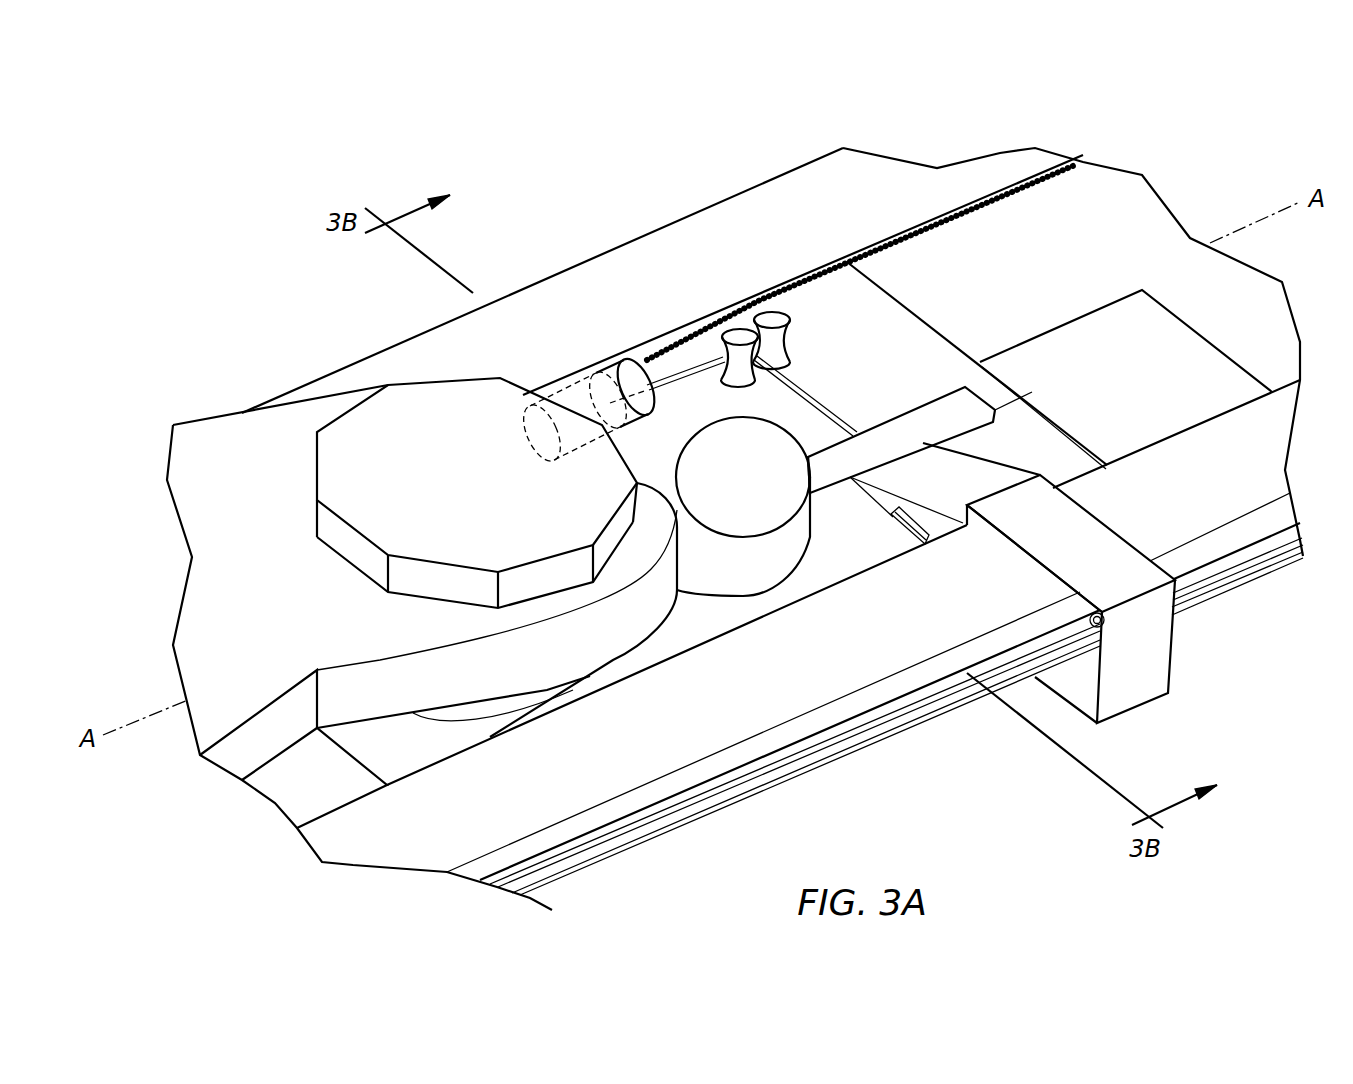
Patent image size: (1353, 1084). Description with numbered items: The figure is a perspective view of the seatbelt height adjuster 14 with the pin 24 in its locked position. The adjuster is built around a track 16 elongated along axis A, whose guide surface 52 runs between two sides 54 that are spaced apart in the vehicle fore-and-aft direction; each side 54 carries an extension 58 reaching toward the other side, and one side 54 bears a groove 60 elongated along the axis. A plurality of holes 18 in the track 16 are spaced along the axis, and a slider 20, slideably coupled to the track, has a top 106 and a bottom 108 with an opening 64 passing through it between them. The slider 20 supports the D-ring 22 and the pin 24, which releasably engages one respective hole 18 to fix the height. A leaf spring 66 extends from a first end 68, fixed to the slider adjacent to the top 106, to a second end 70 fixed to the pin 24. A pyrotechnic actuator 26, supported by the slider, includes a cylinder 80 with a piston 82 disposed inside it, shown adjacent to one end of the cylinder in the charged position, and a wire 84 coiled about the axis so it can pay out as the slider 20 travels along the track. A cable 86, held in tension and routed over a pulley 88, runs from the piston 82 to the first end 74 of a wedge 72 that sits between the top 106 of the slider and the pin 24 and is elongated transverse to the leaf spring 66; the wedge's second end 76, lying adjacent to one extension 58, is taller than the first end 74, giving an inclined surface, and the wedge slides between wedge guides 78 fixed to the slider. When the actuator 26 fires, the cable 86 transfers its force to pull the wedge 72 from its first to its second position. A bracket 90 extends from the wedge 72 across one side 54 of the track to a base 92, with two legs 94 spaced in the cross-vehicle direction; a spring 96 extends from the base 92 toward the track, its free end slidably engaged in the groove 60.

The seatbelt height adjuster 14 is at (1186, 137).
The track 16 is at (792, 162).
The holes 18 is at (1087, 315).
The slider 20 is at (907, 303).
The D-ring 22 is at (215, 418).
The pin 24 is at (745, 533).
The pyrotechnic actuator 26 is at (619, 361).
The guide surface 52 is at (1076, 250).
The sides 54 is at (723, 200).
The extension 58 is at (816, 227).
The groove 60 is at (767, 760).
The opening 64 is at (810, 540).
The leaf spring 66 is at (884, 417).
The first end 68 is at (982, 388).
The second end 70 is at (808, 460).
The wedge 72 is at (982, 461).
The first end 74 is at (850, 477).
The second end 76 is at (947, 540).
The wedge guides 78 is at (903, 532).
The cylinder 80 is at (580, 382).
The piston 82 is at (596, 370).
The wire 84 is at (673, 328).
The cable 86 is at (780, 385).
The pulley 88 is at (787, 340).
The bracket 90 is at (1126, 537).
The base 92 is at (1173, 663).
The legs 94 is at (1028, 555).
The spring 96 is at (1088, 622).
The top 106 is at (942, 335).
The bottom 108 is at (360, 763).